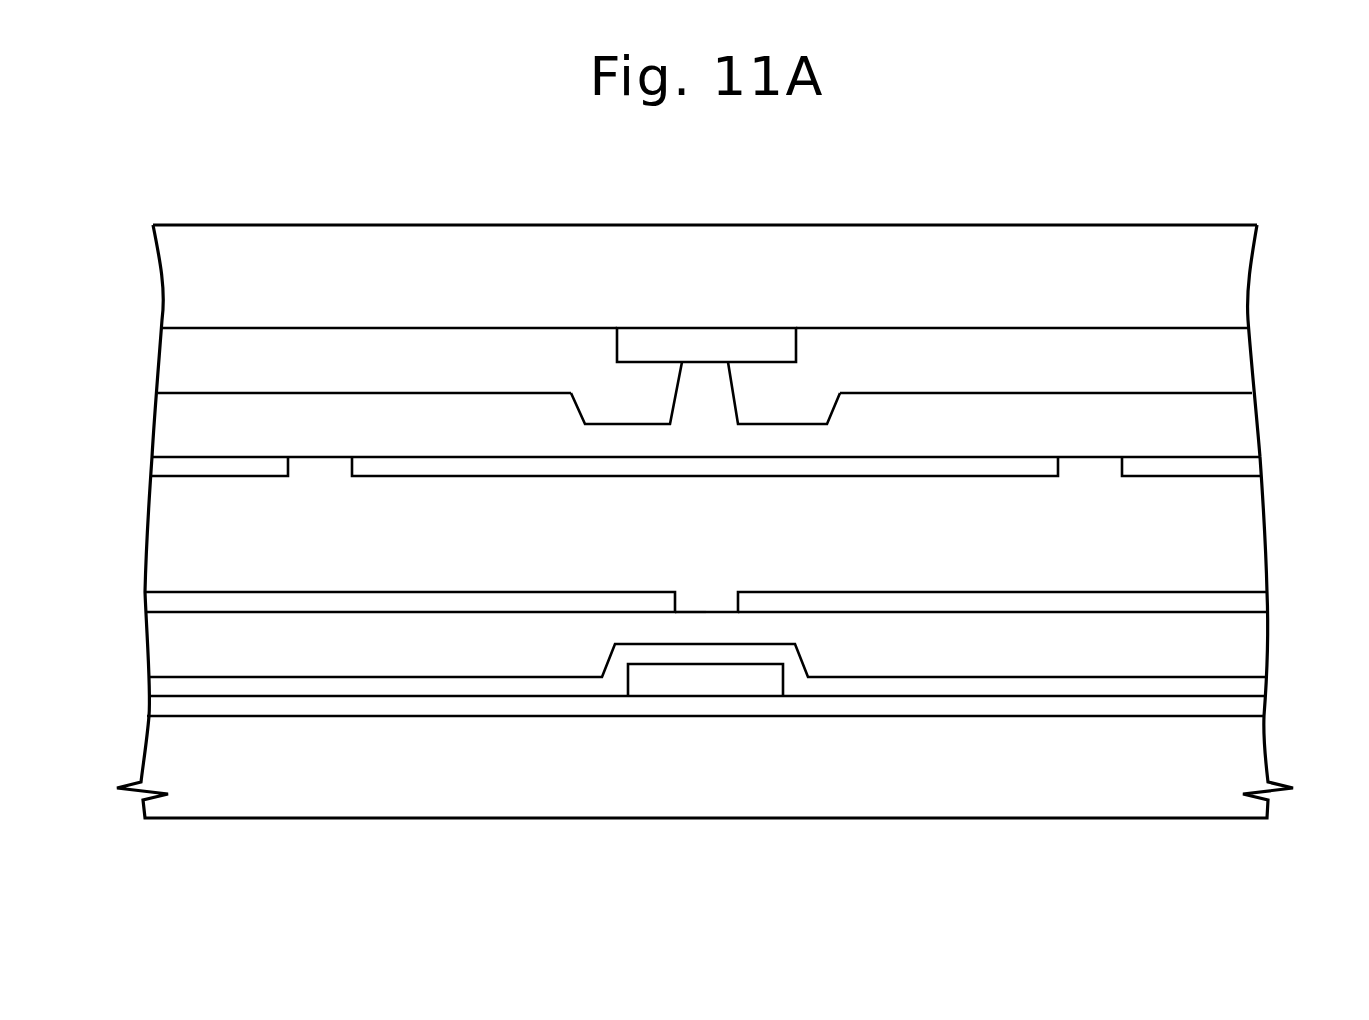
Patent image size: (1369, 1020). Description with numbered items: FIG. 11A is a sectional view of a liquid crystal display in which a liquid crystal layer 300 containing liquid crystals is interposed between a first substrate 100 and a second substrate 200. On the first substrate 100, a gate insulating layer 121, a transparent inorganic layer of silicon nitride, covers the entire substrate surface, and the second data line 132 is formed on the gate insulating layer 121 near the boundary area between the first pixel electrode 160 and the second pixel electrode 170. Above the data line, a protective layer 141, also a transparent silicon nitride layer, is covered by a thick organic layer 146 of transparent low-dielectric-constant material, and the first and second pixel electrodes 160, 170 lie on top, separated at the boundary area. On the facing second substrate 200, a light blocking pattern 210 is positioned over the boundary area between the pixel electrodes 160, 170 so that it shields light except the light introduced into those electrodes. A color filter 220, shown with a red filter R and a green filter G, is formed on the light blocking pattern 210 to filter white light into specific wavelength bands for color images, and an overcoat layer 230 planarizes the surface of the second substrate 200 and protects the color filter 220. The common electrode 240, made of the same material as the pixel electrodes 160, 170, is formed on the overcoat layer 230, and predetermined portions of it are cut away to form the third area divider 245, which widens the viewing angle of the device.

The substrate 100 is at (1255, 754).
The gate insulating layer 121 is at (1255, 720).
The second data line 132 is at (725, 685).
The protective layer 141 is at (1255, 690).
The organic layer 146 is at (1255, 647).
The first pixel electrode 160 is at (168, 603).
The second pixel electrode 170 is at (1255, 605).
The second substrate 200 is at (1243, 280).
The light blocking pattern 210 is at (705, 346).
The color filter 220 is at (1243, 365).
The overcoat layer 230 is at (1250, 430).
The common electrode 240 is at (1250, 472).
The third area divider 245 is at (322, 470).
The liquid crystal layer 300 is at (1250, 540).